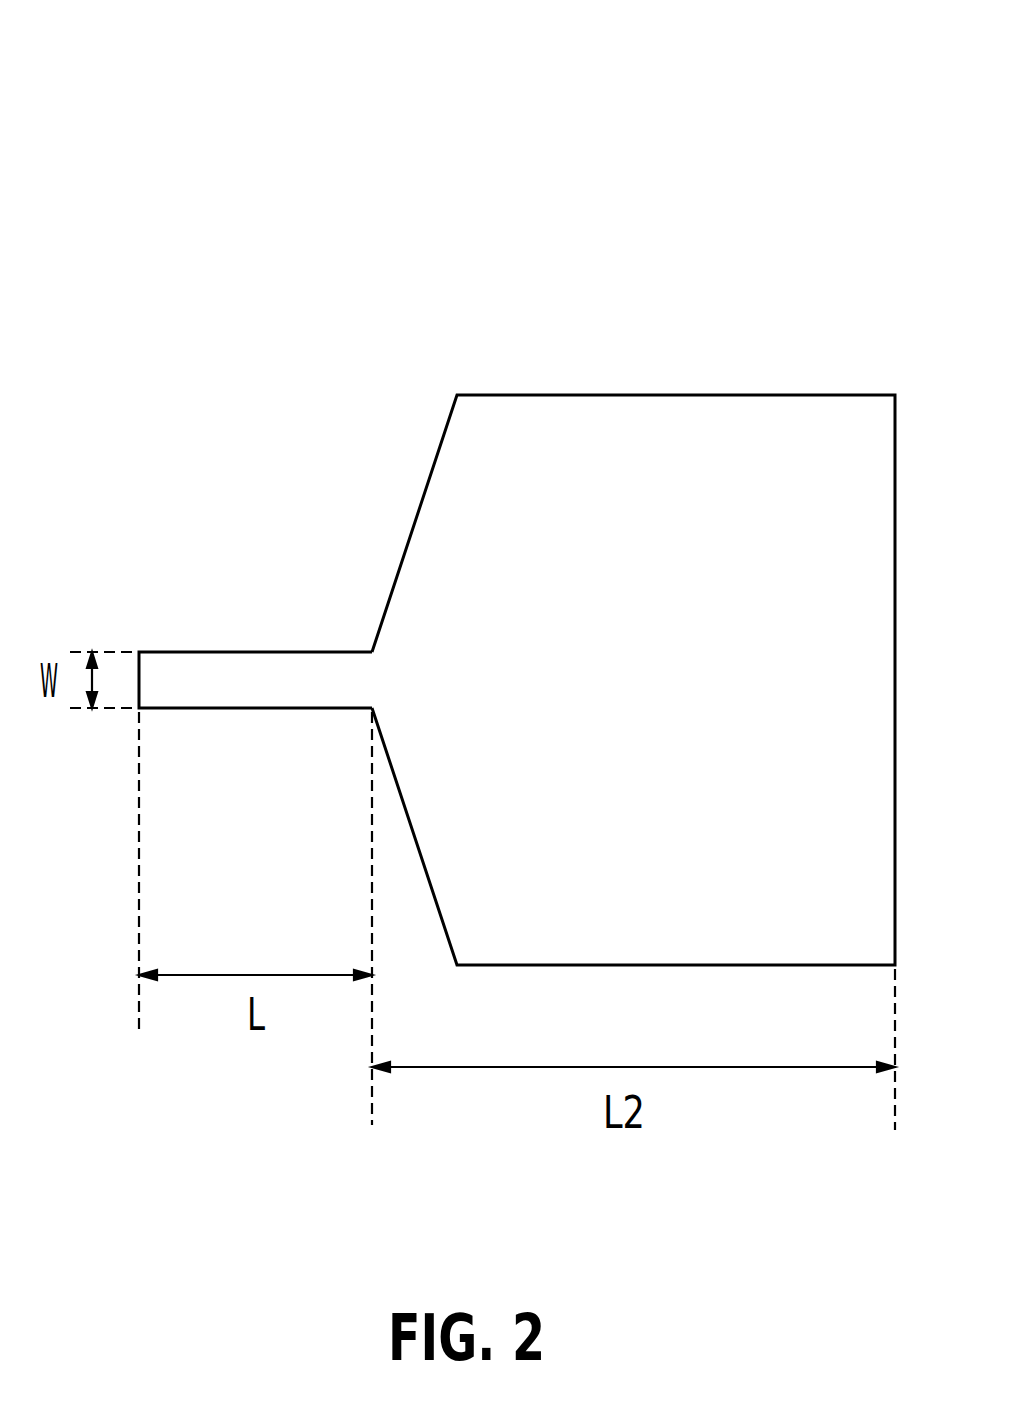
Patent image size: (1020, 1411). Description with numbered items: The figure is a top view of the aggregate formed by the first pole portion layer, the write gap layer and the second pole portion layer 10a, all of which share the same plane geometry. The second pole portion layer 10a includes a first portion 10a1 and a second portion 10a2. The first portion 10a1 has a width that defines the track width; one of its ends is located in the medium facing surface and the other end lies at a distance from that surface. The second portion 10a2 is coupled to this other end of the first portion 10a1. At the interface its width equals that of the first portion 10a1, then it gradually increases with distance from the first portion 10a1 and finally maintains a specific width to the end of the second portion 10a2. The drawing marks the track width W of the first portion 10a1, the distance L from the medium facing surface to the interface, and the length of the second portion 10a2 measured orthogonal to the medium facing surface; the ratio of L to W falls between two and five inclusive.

The second pole portion layer 10a is at (517, 489).
The first portion 10a1 is at (286, 650).
The second portion 10a2 is at (540, 392).